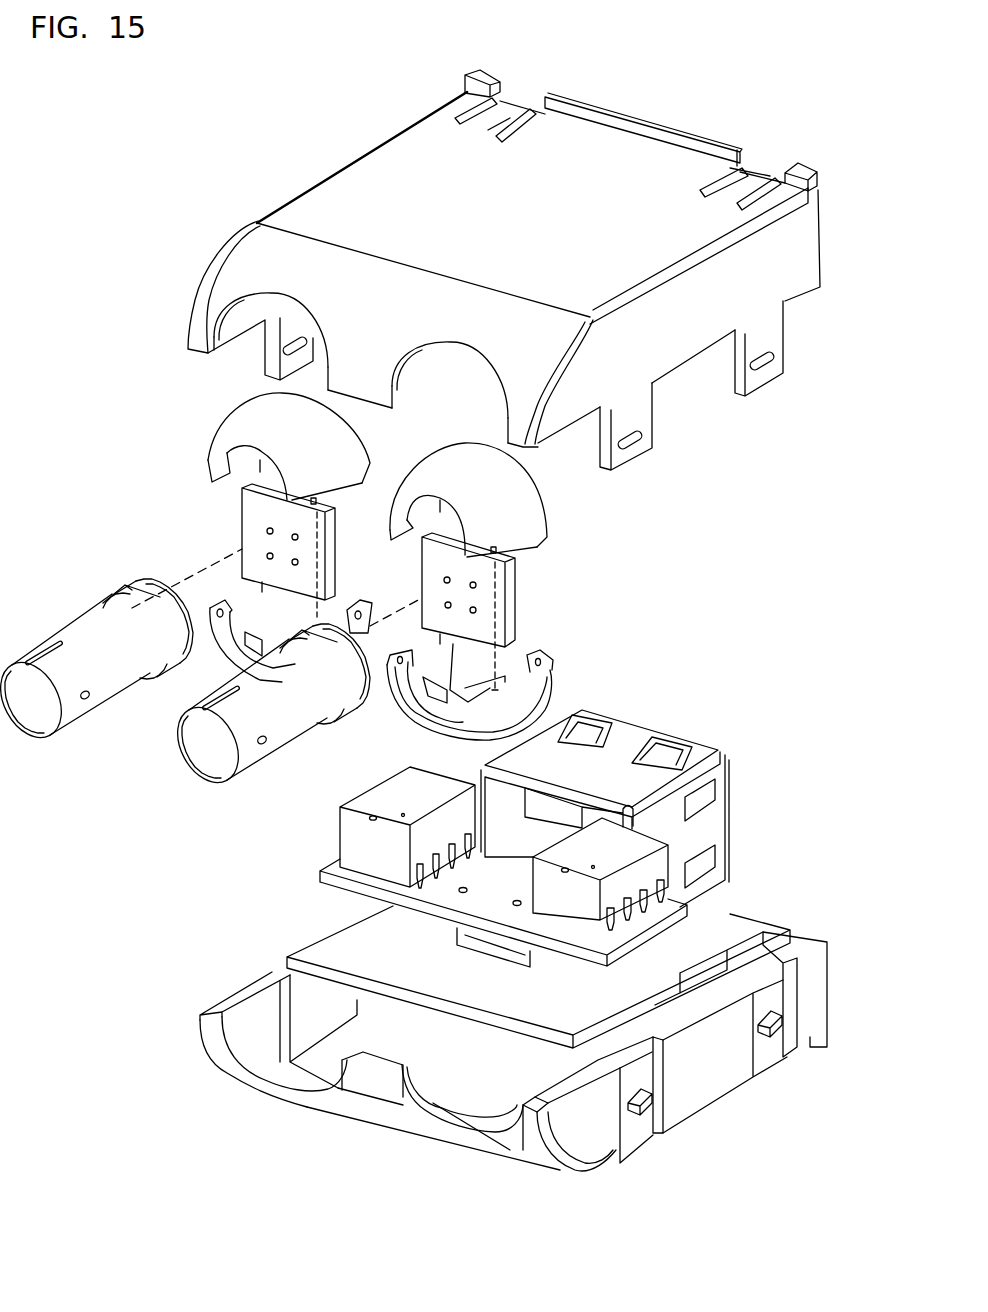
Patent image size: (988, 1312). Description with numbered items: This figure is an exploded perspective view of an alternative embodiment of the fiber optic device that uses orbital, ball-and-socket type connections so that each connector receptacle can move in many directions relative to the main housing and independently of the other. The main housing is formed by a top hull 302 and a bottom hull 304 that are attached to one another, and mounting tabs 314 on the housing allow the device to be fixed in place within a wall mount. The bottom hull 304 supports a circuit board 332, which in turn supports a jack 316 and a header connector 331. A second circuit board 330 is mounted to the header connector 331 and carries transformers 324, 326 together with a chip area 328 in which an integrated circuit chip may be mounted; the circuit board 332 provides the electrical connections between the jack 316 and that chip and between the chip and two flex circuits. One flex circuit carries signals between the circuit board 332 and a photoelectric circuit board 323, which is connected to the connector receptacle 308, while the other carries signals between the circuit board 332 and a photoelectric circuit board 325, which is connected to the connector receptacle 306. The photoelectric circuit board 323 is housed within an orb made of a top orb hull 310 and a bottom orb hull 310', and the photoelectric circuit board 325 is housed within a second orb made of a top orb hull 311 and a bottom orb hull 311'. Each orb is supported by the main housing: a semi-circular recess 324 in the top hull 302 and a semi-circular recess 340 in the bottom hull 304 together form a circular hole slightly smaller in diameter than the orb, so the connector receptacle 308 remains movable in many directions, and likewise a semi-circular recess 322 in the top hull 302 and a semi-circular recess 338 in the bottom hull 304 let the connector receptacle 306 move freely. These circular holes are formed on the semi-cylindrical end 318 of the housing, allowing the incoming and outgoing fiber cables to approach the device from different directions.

The top hull 302 is at (504, 478).
The bottom hull 304 is at (513, 1066).
The connector receptacle 306 is at (37, 728).
The connector receptacle 308 is at (213, 777).
The top orb hull 310 is at (510, 500).
The bottom orb hull 310' is at (506, 692).
The top orb hull 311 is at (270, 446).
The bottom orb hull 311' is at (273, 647).
The mounting tabs 314 is at (497, 113).
The jack 316 is at (717, 818).
The semi-cylindrical end 318 is at (407, 280).
The semi-circular recess 322 is at (287, 293).
The photoelectric circuit board 323 is at (510, 593).
The semi-circular recess / transformer 324 is at (463, 345).
The photoelectric circuit board 325 is at (247, 525).
The transformer 326 is at (660, 870).
The chip area 328 is at (530, 855).
The circuit board 330 is at (333, 890).
The header connector 331 is at (507, 960).
The circuit board 332 is at (295, 962).
The semi-circular recess 338 is at (278, 1077).
The semi-circular recess 340 is at (459, 1130).